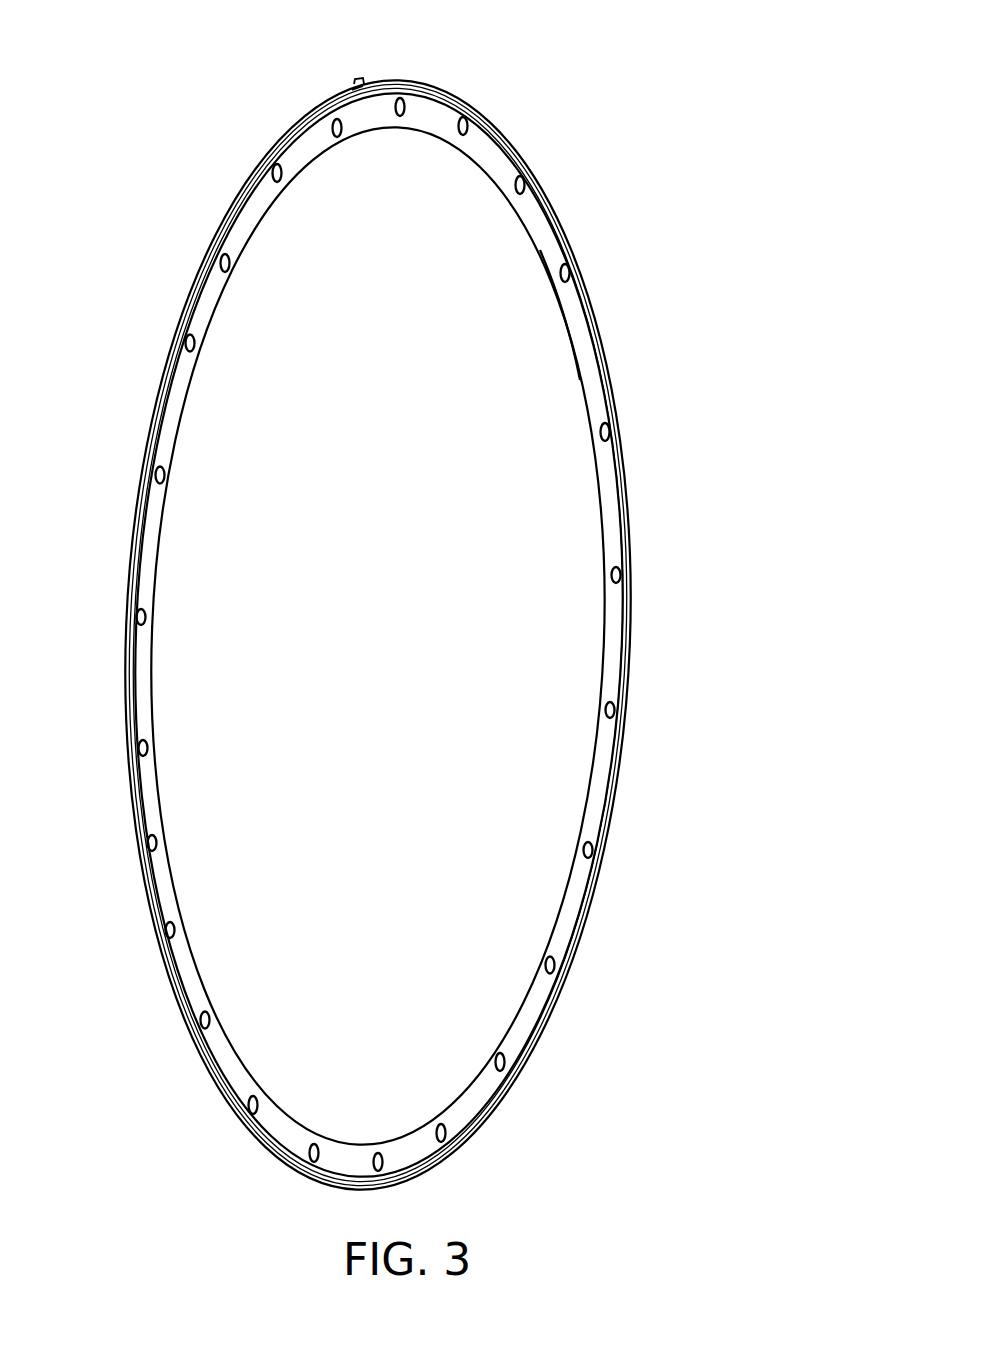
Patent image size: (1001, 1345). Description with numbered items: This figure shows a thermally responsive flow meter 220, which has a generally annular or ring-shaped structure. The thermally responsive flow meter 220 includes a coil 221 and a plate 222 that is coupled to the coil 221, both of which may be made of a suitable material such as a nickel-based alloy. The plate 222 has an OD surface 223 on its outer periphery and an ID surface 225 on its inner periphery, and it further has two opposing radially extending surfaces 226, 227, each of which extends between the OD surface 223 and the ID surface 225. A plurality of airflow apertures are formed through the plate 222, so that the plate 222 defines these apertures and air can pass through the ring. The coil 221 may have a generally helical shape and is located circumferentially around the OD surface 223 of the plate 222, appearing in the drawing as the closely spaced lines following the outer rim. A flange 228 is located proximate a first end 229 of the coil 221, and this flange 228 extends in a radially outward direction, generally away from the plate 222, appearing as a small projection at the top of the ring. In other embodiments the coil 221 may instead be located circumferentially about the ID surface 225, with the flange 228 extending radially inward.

The thermally responsive flow meter 220 is at (142, 110).
The coil 221 is at (282, 147).
The plate 222 is at (538, 212).
The OD surface 223 is at (498, 128).
The ID surface 225 is at (368, 132).
The radially extending surface 226 is at (590, 362).
The radially extending surface 227 is at (568, 330).
The flange 228 is at (358, 82).
The first end 229 is at (355, 88).